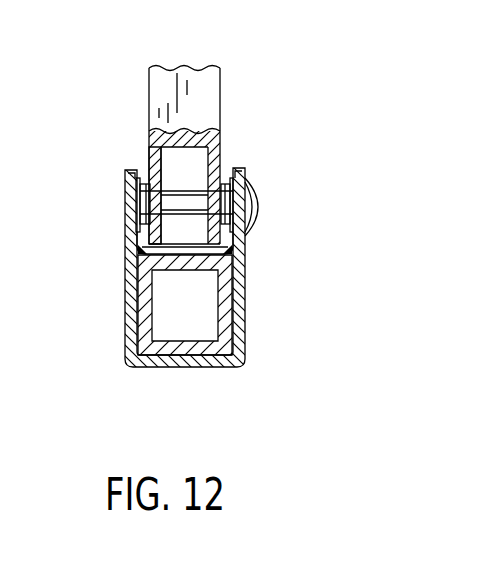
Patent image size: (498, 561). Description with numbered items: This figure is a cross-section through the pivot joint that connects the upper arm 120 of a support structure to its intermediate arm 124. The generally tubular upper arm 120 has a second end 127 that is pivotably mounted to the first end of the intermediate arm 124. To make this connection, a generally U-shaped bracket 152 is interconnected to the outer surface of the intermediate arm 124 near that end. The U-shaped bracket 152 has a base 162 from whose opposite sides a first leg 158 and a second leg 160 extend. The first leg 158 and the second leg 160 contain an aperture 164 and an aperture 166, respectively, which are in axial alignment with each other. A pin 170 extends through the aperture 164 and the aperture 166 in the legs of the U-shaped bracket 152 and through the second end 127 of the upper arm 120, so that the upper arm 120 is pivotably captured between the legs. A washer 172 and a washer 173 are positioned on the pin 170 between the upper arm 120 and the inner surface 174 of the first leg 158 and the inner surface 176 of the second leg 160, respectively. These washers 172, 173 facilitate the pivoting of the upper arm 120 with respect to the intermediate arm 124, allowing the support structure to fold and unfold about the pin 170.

The upper arm 120 is at (203, 82).
The second end 127 is at (139, 143).
The pin 170 is at (185, 180).
The washer 172 is at (136, 166).
The washer 173 is at (229, 166).
The aperture 164 is at (125, 204).
The aperture 166 is at (248, 206).
The second leg 160 is at (230, 293).
The intermediate arm 124 is at (233, 292).
The first leg 158 is at (130, 300).
The inner surface 174 is at (144, 318).
The inner surface 176 is at (226, 308).
The U-shaped bracket 152 is at (120, 365).
The base 162 is at (192, 364).